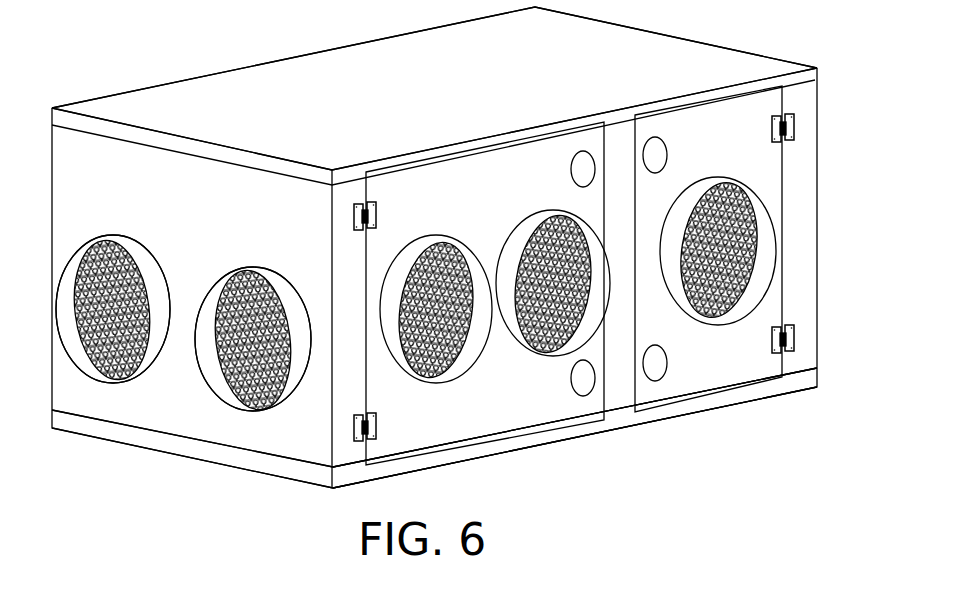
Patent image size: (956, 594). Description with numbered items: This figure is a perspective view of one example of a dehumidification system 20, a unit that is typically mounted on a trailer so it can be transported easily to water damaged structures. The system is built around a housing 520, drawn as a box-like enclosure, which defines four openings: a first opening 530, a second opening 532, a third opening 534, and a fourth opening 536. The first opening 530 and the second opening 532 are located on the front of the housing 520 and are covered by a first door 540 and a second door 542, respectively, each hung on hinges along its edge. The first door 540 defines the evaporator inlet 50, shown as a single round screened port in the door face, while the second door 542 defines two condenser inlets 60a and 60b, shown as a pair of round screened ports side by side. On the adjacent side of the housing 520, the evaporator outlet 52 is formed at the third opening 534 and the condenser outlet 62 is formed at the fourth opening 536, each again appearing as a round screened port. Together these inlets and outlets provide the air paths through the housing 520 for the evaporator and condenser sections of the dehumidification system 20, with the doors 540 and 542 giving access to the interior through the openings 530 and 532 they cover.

The dehumidification system 20 is at (240, 53).
The housing 520 is at (395, 57).
The first opening 530 is at (698, 423).
The second opening 532 is at (583, 443).
The third opening 534 is at (130, 233).
The evaporator outlet 52 is at (143, 378).
The condenser outlet 62 is at (230, 268).
The fourth opening 536 is at (245, 418).
The second door 542 is at (465, 427).
The condenser inlet 60b is at (399, 378).
The condenser inlet 60a is at (557, 357).
The first door 540 is at (710, 378).
The evaporator inlet 50 is at (750, 182).